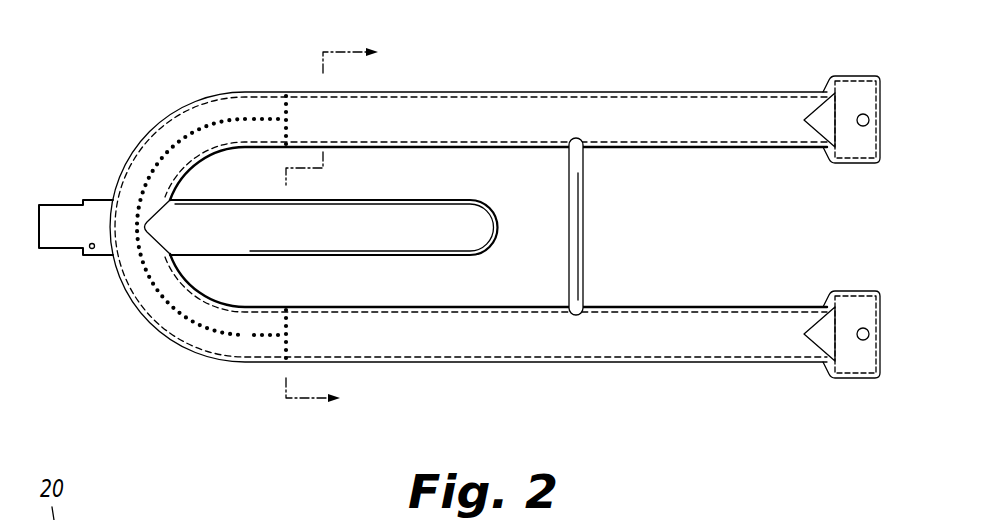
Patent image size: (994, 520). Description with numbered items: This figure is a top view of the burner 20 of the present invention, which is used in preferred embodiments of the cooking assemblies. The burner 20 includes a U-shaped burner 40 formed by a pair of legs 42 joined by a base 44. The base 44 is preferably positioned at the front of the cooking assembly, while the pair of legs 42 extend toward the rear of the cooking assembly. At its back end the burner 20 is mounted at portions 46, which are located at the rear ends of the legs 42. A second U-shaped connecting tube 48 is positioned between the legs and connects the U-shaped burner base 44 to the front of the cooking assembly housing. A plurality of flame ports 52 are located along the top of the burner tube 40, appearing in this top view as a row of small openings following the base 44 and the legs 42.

The burner 20 is at (104, 101).
The U-shaped burner 40 is at (487, 92).
The legs 42 is at (643, 92).
The base 44 is at (158, 120).
The portions 46 is at (853, 164).
The second U-shaped connecting tube 48 is at (400, 255).
The flame ports 52 is at (200, 326).